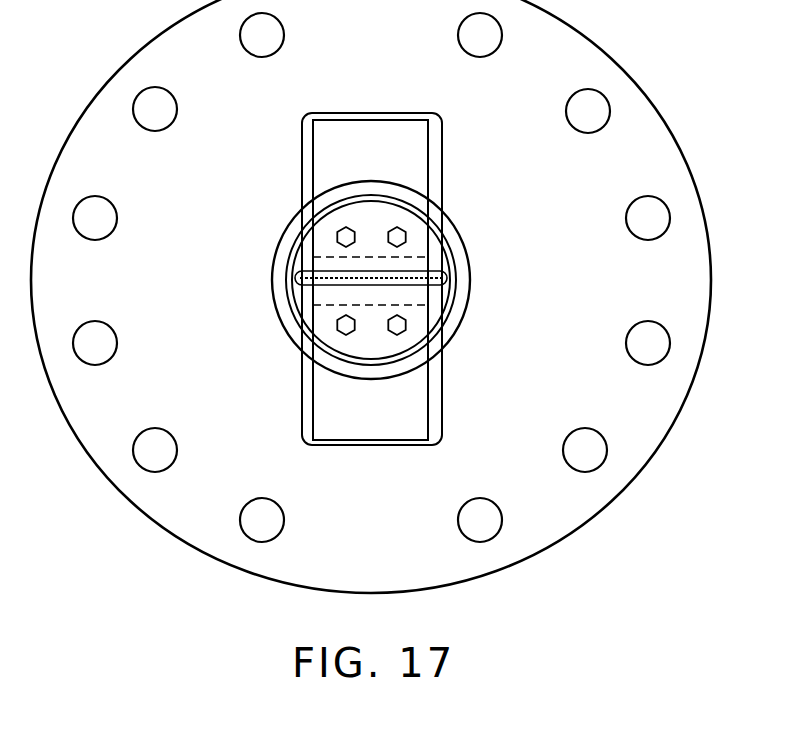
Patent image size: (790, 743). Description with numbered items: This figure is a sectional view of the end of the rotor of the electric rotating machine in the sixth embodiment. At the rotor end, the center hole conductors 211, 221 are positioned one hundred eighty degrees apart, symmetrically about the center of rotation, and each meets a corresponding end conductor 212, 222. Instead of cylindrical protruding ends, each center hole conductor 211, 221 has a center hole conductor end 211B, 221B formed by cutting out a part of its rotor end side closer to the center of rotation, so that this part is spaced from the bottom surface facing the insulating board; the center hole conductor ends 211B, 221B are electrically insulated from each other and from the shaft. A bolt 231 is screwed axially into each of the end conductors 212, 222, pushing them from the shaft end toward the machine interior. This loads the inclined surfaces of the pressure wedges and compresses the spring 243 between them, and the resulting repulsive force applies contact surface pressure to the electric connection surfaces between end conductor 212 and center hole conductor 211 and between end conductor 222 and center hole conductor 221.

The end conductor 212 is at (388, 128).
The end conductor 222 is at (388, 430).
The center hole conductor 211 is at (437, 270).
The center hole conductor 221 is at (437, 290).
The center hole conductor end 211B is at (303, 244).
The center hole conductor end 221B is at (302, 308).
The spring 243 is at (330, 279).
The bolt 231 is at (397, 237).